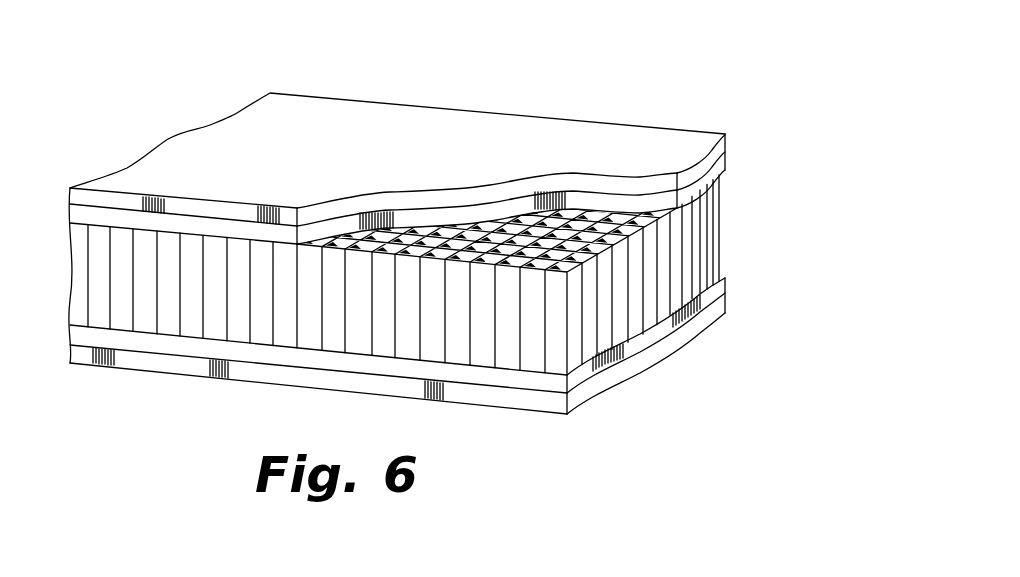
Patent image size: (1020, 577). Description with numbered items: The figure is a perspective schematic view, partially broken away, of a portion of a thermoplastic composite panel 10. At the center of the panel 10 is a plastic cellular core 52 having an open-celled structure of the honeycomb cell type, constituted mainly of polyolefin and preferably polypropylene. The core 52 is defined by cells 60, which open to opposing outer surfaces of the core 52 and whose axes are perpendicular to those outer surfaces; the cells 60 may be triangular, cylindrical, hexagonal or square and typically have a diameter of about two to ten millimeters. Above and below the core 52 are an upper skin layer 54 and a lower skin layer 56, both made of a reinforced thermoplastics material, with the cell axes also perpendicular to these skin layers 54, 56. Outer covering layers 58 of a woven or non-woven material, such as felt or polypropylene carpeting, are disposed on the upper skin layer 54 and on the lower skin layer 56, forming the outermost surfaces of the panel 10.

The composite panel 10 is at (492, 102).
The cellular core 52 is at (736, 236).
The upper skin layer 54 is at (727, 159).
The lower skin layer 56 is at (727, 289).
The outer covering layer 58 is at (727, 143).
The cells 60 is at (565, 232).